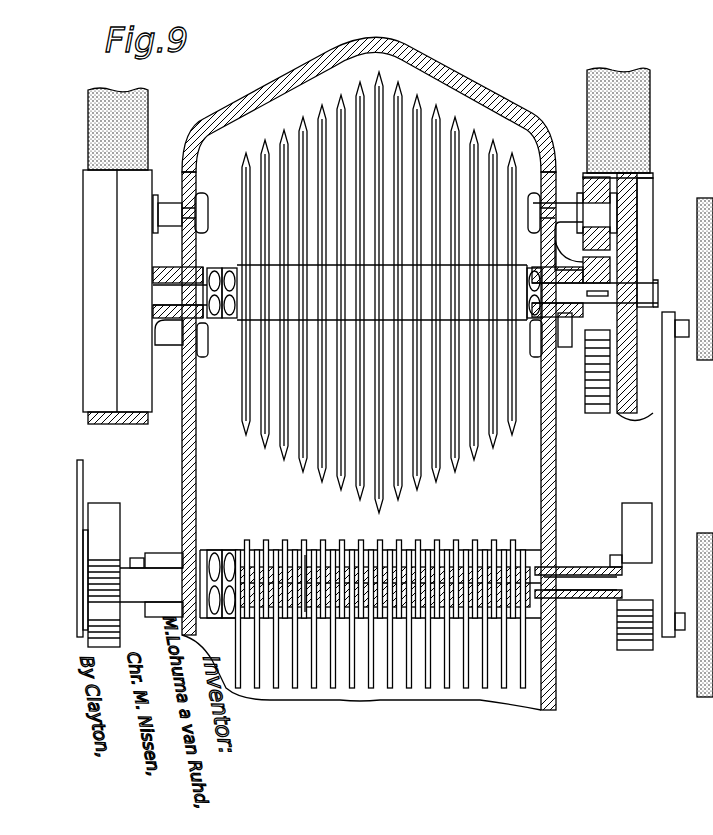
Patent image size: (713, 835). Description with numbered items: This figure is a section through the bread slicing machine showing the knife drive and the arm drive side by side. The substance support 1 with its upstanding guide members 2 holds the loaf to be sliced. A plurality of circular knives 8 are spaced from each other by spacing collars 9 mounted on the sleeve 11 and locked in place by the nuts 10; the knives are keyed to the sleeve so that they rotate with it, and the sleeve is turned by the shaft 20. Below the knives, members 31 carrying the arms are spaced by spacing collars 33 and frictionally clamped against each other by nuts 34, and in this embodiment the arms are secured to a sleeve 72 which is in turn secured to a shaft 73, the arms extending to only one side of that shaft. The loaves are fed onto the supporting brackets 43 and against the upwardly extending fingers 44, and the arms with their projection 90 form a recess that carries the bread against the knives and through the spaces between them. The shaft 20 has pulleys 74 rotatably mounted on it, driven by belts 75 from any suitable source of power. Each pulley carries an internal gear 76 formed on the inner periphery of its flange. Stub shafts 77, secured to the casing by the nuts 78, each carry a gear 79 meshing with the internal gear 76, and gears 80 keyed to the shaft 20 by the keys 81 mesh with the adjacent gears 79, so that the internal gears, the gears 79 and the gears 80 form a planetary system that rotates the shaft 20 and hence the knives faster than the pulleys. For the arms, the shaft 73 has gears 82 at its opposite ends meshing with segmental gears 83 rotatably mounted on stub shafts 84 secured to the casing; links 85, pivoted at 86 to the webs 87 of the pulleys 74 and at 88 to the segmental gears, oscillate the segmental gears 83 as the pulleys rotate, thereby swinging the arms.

The substance support 1 is at (552, 686).
The guide members 2 is at (500, 112).
The circular knives 8 is at (294, 440).
The spacing collars 9 is at (280, 322).
The nuts 10 is at (228, 320).
The sleeve 11 is at (527, 266).
The shaft 20 is at (190, 292).
The members 31 is at (302, 548).
The spacing collars 33 is at (312, 690).
The nuts 34 is at (220, 548).
The supporting brackets 43 is at (485, 550).
The fingers 44 is at (452, 550).
The sleeve 72 is at (534, 548).
The shaft 73 is at (145, 562).
The pulleys 74 is at (142, 180).
The belts 75 is at (143, 120).
The internal gear 76 is at (600, 415).
The stub shafts 77 is at (162, 212).
The nuts 78 is at (205, 213).
The gear 79 is at (572, 230).
The gears 80 is at (600, 262).
The keys 81 is at (605, 295).
The gears 82 is at (138, 556).
The segmental gears 83 is at (112, 518).
The stub shafts 84 is at (85, 520).
The links 85 is at (83, 455).
The pivot 86 is at (688, 325).
The webs 87 is at (632, 425).
The pivot 88 is at (680, 632).
The projection 90 is at (330, 560).